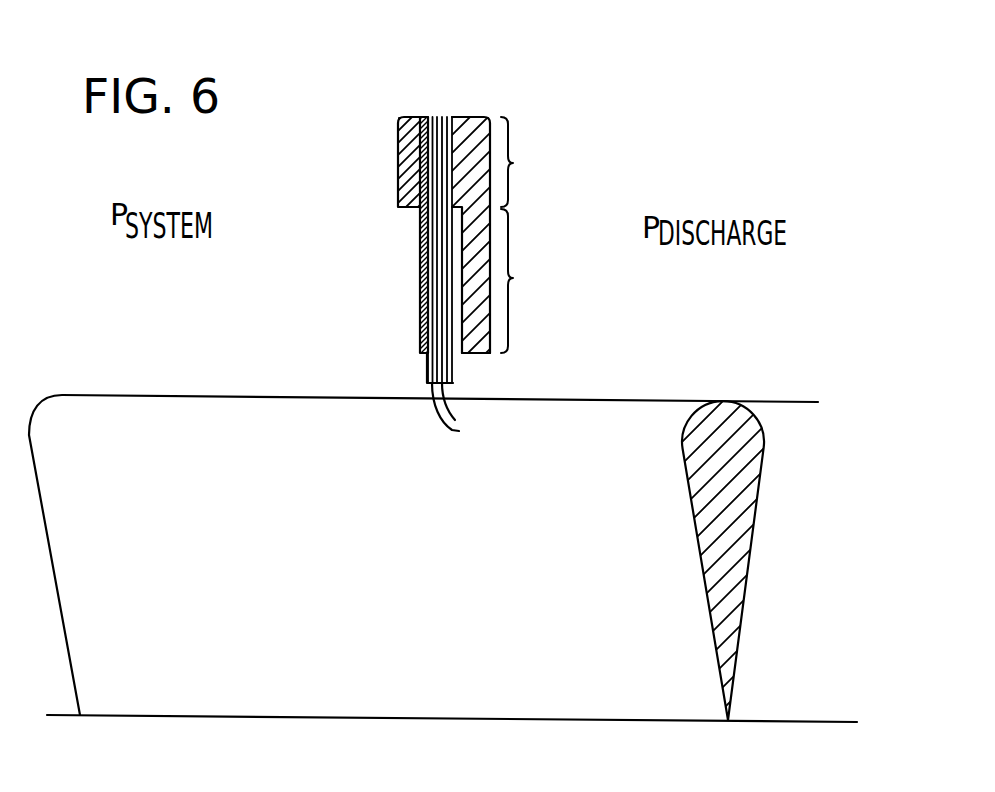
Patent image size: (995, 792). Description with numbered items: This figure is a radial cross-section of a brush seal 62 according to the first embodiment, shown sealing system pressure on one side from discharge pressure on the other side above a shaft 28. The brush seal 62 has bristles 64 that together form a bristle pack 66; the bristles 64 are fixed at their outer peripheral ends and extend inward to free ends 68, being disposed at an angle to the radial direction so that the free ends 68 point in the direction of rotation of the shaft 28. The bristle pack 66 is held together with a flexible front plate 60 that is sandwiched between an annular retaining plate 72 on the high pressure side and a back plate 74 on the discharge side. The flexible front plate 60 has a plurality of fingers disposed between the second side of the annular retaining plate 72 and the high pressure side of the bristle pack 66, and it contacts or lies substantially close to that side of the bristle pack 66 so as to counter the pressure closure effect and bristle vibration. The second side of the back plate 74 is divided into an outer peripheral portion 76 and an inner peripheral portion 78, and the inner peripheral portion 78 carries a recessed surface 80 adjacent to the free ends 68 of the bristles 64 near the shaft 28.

The shaft 28 is at (622, 400).
The flexible front plate 60 is at (421, 307).
The brush seal 62 is at (454, 252).
The bristles 64 is at (426, 376).
The bristle pack 66 is at (439, 252).
The free ends 68 is at (459, 417).
The annular retaining plate 72 is at (398, 148).
The back plate 74 is at (467, 117).
The outer peripheral portion 76 is at (521, 162).
The inner peripheral portion 78 is at (522, 281).
The recessed surface 80 is at (461, 343).